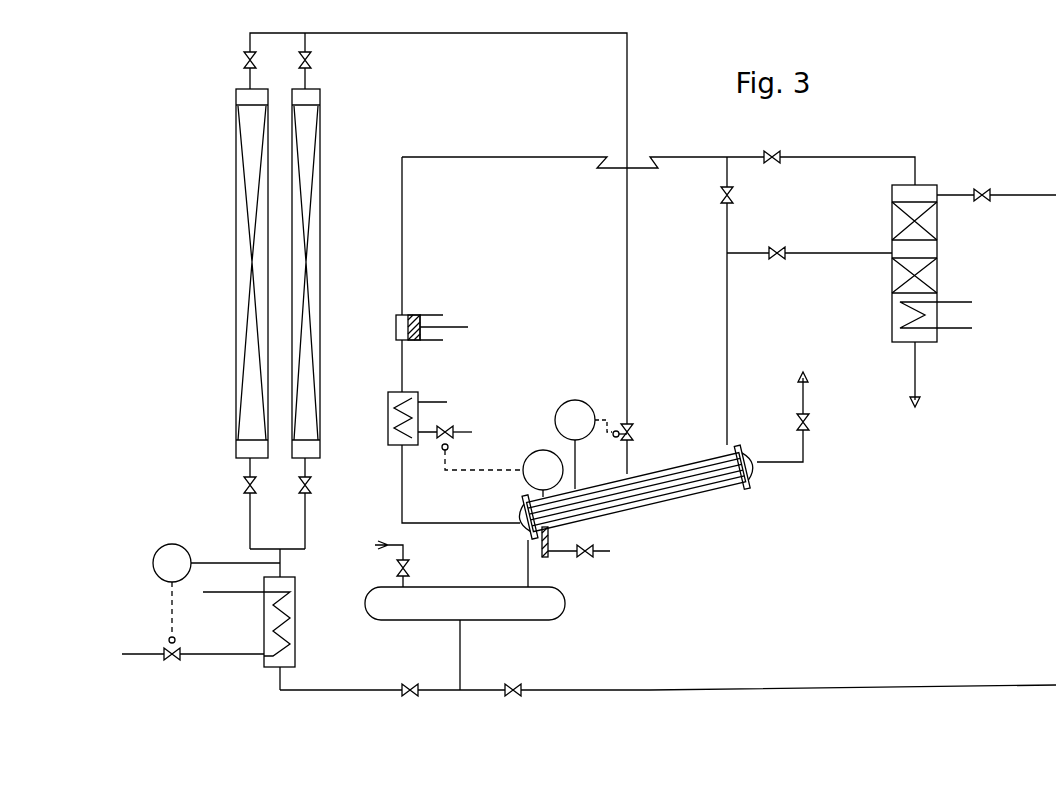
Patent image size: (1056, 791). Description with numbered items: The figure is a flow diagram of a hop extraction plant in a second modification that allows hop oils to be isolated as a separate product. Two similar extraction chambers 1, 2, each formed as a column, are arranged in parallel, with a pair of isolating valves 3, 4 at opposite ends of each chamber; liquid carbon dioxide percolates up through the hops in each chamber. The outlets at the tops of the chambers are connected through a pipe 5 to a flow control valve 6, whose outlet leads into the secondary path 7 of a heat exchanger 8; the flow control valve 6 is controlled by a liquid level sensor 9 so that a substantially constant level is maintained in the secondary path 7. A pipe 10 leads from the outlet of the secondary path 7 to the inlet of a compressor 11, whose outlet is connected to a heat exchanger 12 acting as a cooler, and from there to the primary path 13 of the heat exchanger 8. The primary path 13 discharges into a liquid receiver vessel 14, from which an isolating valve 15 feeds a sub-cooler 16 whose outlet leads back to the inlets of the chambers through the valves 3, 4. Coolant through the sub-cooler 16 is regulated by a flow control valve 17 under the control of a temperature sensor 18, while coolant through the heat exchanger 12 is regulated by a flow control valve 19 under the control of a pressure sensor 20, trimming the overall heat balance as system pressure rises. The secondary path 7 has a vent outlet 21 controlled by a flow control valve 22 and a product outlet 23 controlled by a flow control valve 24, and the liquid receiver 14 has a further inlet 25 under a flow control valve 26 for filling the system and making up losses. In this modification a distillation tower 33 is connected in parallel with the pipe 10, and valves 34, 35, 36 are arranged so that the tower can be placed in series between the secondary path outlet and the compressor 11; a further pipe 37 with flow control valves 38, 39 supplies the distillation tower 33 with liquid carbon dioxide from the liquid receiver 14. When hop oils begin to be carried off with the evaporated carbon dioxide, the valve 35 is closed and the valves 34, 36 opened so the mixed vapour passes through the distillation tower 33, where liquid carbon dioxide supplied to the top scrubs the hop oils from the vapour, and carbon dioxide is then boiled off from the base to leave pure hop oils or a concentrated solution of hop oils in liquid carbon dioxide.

The extraction chamber 1 is at (236, 256).
The extraction chamber 2 is at (320, 258).
The isolating valve 3 is at (243, 62).
The isolating valve 4 is at (312, 62).
The pipe 5 is at (627, 72).
The flow control valve 6 is at (640, 430).
The secondary path 7 is at (636, 492).
The heat exchanger 8 is at (676, 512).
The liquid level sensor 9 is at (577, 410).
The pipe 10 is at (727, 310).
The compressor 11 is at (428, 315).
The heat exchanger 12 is at (418, 400).
The primary path 13 is at (521, 527).
The liquid receiver vessel 14 is at (565, 605).
The isolating valve 15 is at (405, 684).
The sub-cooler 16 is at (293, 622).
The flow control valve 17 is at (188, 652).
The temperature sensor 18 is at (170, 553).
The flow control valve 19 is at (448, 425).
The pressure sensor 20 is at (536, 462).
The vent outlet 21 is at (768, 463).
The flow control valve 22 is at (812, 422).
The product outlet 23 is at (558, 556).
The flow control valve 24 is at (592, 553).
The further inlet 25 is at (410, 582).
The flow control valve 26 is at (412, 560).
The distillation tower 33 is at (925, 252).
The valve 34 is at (780, 248).
The valve 35 is at (737, 190).
The valve 36 is at (772, 150).
The further pipe 37 is at (776, 685).
The flow control valve 38 is at (514, 684).
The flow control valve 39 is at (990, 190).